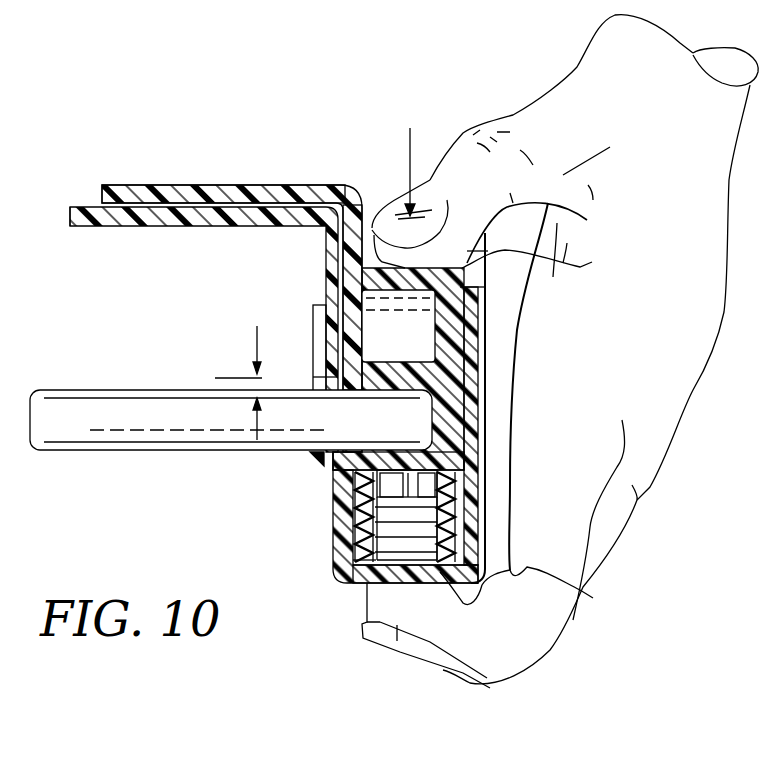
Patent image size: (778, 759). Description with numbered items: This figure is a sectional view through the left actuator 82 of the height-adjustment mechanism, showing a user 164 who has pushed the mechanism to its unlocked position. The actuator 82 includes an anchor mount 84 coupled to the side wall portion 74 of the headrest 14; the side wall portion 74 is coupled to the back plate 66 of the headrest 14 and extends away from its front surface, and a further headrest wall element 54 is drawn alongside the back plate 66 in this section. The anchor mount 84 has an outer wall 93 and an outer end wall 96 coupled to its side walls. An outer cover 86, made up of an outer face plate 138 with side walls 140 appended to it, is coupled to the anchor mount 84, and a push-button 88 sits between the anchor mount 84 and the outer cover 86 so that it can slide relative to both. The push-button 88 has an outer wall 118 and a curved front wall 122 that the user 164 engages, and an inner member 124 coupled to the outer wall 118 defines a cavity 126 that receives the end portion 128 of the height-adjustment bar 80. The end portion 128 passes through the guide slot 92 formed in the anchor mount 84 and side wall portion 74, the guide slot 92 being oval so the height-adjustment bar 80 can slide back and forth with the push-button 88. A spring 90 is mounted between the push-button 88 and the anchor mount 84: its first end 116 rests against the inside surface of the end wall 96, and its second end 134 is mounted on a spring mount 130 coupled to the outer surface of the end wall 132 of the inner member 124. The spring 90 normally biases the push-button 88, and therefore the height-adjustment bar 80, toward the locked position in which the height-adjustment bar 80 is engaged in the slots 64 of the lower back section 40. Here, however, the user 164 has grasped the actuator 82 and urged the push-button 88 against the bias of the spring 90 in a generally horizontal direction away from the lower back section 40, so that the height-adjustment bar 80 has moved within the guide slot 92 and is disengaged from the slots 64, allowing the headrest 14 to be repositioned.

The headrest 14 is at (118, 183).
The back plate 66 is at (201, 198).
The lower back section 40 is at (66, 218).
The lower arm of bracket 54 is at (130, 222).
The side wall portion 74 is at (348, 242).
The slots 64 is at (345, 310).
The guide slot 92 is at (257, 383).
The push-button 88 is at (440, 252).
The curved front wall 122 is at (549, 262).
The outer wall 118 is at (450, 333).
The cavity 126 is at (377, 390).
The inner member 124 is at (403, 373).
The outer cover 86 is at (501, 459).
The outer face plate 138 is at (478, 500).
The second end of spring 134 is at (467, 514).
The spring 90 is at (460, 518).
The user 164 is at (693, 355).
The height-adjustment bar 80 is at (72, 427).
The end portion of height-adjustment bar 128 is at (338, 452).
The anchor mount 84 is at (321, 500).
The actuator 82 is at (272, 520).
The outer wall 93 is at (352, 532).
The end wall 132 is at (362, 540).
The spring mount 130 is at (397, 495).
The outer end wall 96 is at (377, 590).
The side walls 140 is at (428, 587).
The first end of spring 116 is at (580, 591).